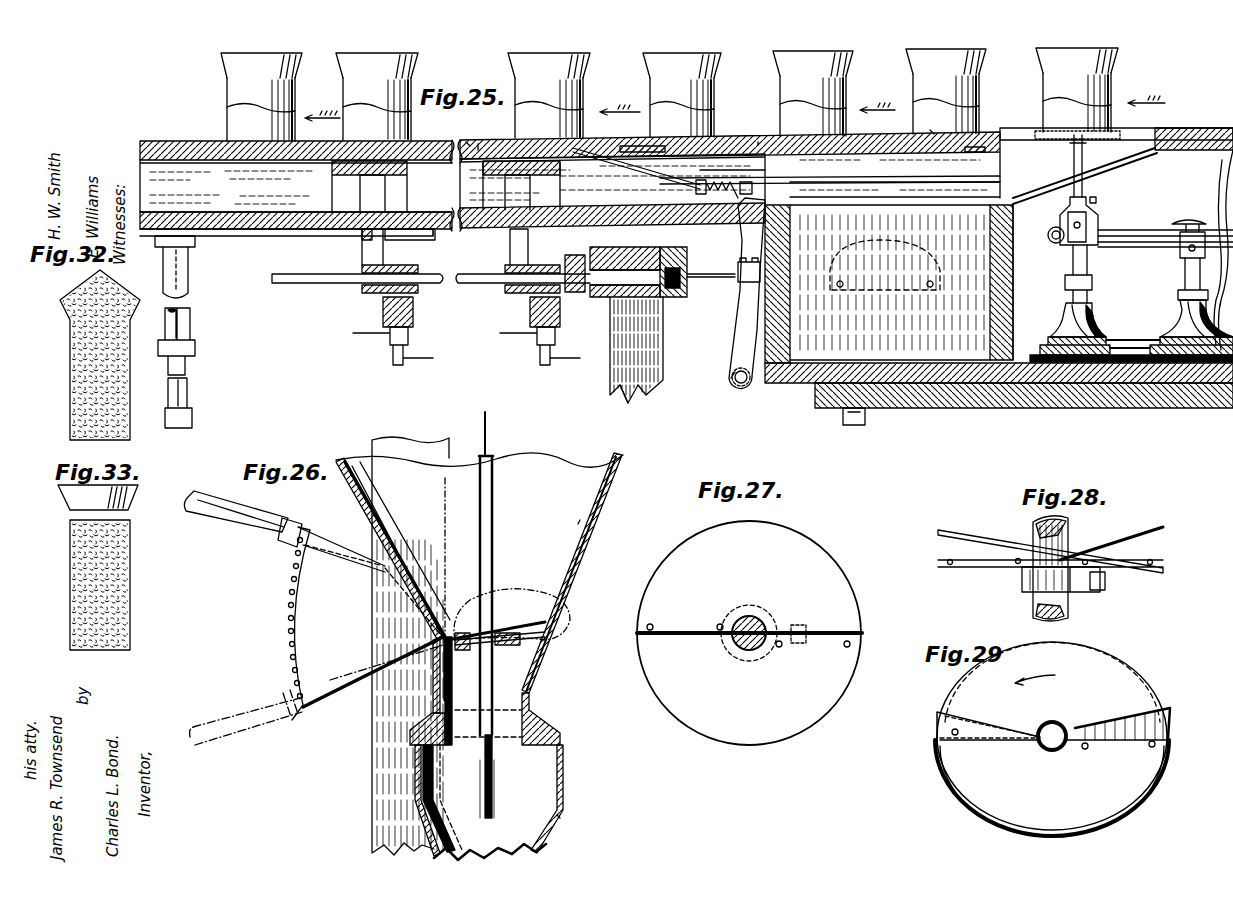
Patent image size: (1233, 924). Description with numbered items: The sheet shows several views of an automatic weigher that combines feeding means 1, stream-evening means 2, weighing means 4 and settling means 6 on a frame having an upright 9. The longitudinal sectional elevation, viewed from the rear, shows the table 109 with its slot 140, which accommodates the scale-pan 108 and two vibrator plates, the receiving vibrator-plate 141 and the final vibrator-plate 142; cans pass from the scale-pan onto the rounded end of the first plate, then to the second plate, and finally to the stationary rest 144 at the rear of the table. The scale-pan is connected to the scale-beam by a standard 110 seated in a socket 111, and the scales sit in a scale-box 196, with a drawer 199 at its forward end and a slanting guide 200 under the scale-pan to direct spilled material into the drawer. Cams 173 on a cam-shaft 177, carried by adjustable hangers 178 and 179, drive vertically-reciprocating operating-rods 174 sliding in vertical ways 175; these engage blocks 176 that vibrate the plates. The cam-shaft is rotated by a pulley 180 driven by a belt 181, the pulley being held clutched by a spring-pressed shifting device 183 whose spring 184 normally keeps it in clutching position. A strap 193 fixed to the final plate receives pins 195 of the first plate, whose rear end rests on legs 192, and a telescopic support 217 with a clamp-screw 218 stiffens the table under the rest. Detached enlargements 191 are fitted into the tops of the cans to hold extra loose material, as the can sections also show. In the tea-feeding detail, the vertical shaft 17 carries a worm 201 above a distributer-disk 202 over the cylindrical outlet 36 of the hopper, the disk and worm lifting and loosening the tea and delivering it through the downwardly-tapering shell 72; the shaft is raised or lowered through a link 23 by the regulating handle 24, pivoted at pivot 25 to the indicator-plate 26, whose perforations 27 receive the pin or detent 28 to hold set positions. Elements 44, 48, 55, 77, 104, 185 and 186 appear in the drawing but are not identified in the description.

In FIG. 26, the feeding means 1 is at (589, 566).
In FIG. 26, the stream-evening means 2 is at (574, 813).
In FIG. 25, the weighing means 4 is at (1136, 122).
In FIG. 25, the settling means 6 is at (478, 144).
In FIG. 26, the upright 9 is at (372, 714).
In FIG. 26, the vertical shaft 17 is at (493, 688).
In FIG. 27, the vertical shaft 17 is at (749, 616).
In FIG. 28, the vertical shaft 17 is at (1063, 537).
In FIG. 26, the link 23 is at (484, 438).
In FIG. 26, the regulating handle 24 is at (268, 526).
In FIG. 26, the pivot 25 is at (496, 568).
In FIG. 26, the indicator-plate 26 is at (302, 590).
In FIG. 26, the perforations 27 is at (280, 592).
In FIG. 26, the pin or detent 28 is at (298, 544).
In FIG. 27, the pin or detent 28 is at (885, 633).
In FIG. 26, the cylindrical outlet 36 is at (542, 722).
In FIG. 26, the shaft lower end 44 is at (482, 778).
In FIG. 26, the flange 48 is at (410, 732).
In FIG. 26, the hopper wall 55 is at (580, 518).
In FIG. 26, the downwardly-tapering shell 72 is at (558, 774).
In FIG. 25, the bell support standard 77 is at (1132, 314).
In FIG. 25, the bottle receiving tube 104 is at (244, 93).
In FIG. 25, the scale-pan 108 is at (1037, 130).
In FIG. 25, the table 109 is at (1207, 122).
In FIG. 25, the standard 110 is at (1089, 182).
In FIG. 25, the socket 111 is at (1095, 210).
In FIG. 25, the slot 140 is at (939, 118).
In FIG. 25, the receiving vibrator-plate 141 is at (758, 142).
In FIG. 25, the final vibrator-plate 142 is at (476, 142).
In FIG. 25, the stationary rest 144 is at (164, 142).
In FIG. 25, the cam 173 is at (360, 265).
In FIG. 25, the vibrator operating-rod 174 is at (360, 246).
In FIG. 25, the vertical ways 175 is at (345, 200).
In FIG. 25, the blocks 176 is at (329, 172).
In FIG. 25, the cam-shaft 177 is at (311, 285).
In FIG. 25, the adjustable hanger 178 is at (407, 244).
In FIG. 25, the adjustable hanger 179 is at (568, 249).
In FIG. 25, the pulley 180 is at (654, 312).
In FIG. 25, the belt 181 is at (638, 396).
In FIG. 25, the spring-pressed shifting device 183 is at (719, 382).
In FIG. 25, the spring 184 is at (752, 384).
In FIG. 25, the lever 185 is at (812, 182).
In FIG. 25, the spring 186 is at (686, 186).
In FIG. 25, the enlargement 191 is at (231, 68).
In FIG. 25, the legs 192 is at (998, 162).
In FIG. 25, the strap 193 is at (625, 146).
In FIG. 25, the pins 195 is at (764, 173).
In FIG. 25, the scale-box 196 is at (1010, 284).
In FIG. 25, the drawer 199 is at (902, 284).
In FIG. 25, the slanting guide 200 is at (1040, 186).
In FIG. 26, the worm 201 is at (544, 655).
In FIG. 27, the worm 201 is at (710, 702).
In FIG. 28, the worm 201 is at (1004, 574).
In FIG. 29, the worm 201 is at (1098, 689).
In FIG. 26, the distributer-disk 202 is at (438, 663).
In FIG. 28, the distributer-disk 202 is at (1116, 578).
In FIG. 25, the telescopic support 217 is at (186, 386).
In FIG. 25, the clamp-screw 218 is at (196, 340).